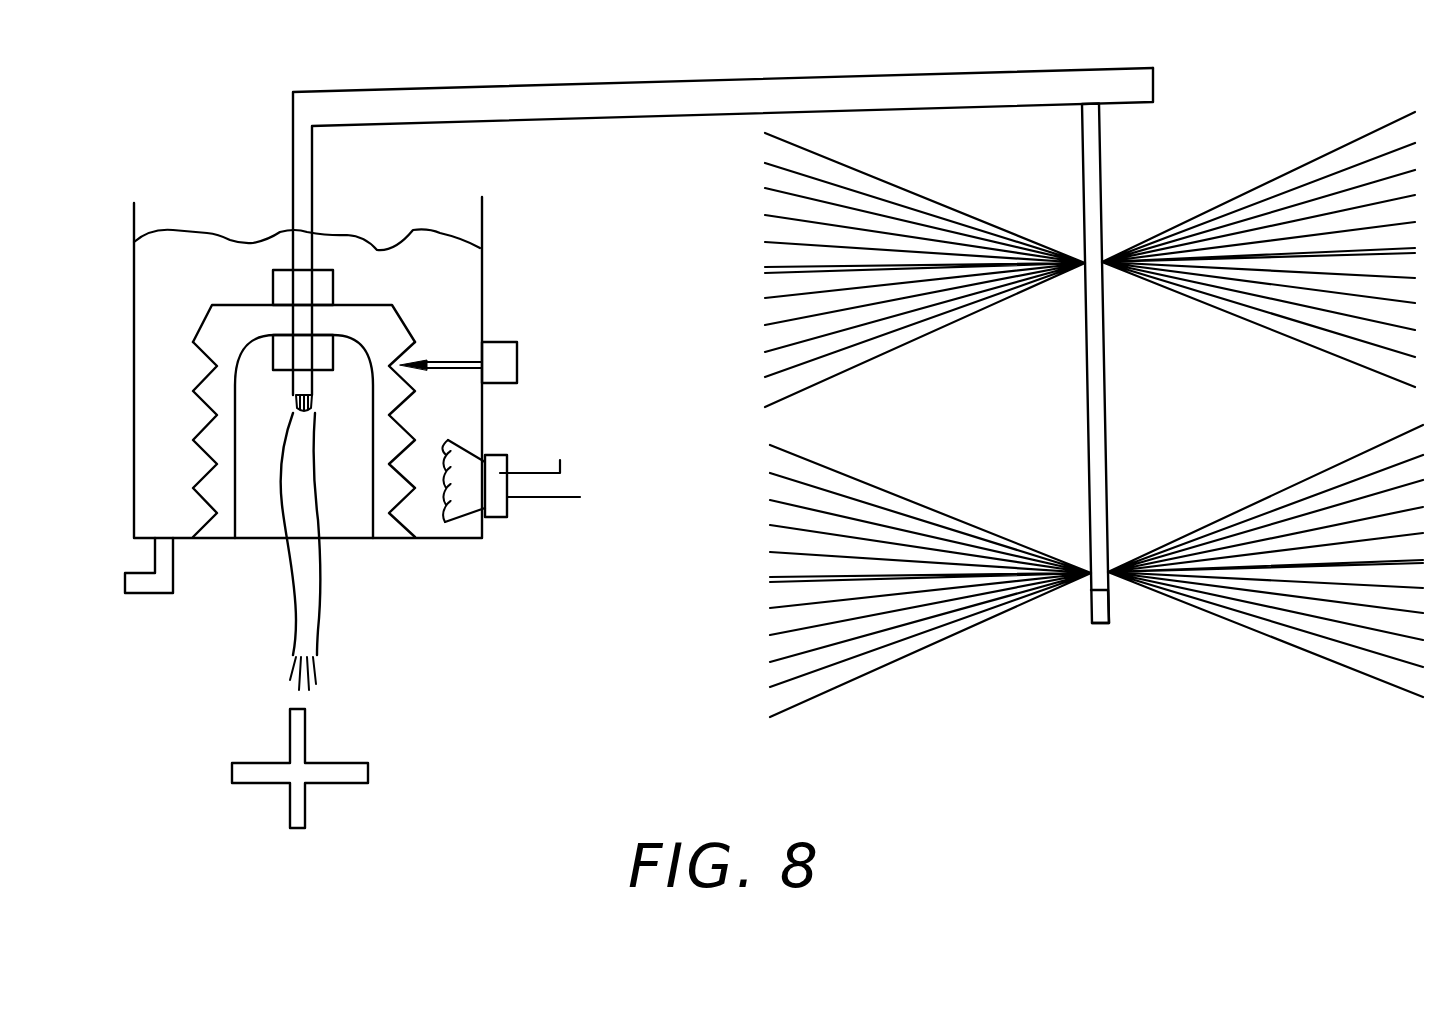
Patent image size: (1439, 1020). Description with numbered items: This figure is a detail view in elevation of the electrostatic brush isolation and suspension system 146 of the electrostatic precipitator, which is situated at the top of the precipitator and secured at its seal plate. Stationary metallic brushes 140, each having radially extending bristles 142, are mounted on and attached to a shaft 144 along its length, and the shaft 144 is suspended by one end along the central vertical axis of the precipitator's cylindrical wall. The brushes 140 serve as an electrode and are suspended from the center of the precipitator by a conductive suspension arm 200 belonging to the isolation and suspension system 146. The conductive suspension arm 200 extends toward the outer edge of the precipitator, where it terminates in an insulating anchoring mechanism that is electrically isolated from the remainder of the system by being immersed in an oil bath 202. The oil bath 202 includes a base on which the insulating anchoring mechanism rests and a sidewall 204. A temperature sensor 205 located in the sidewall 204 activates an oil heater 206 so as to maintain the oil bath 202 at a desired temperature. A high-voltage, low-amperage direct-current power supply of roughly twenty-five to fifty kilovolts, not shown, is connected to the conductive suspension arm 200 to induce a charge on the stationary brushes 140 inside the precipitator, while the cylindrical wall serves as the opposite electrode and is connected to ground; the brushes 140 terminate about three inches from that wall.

The stationary brushes 140 is at (1110, 604).
The radially extending bristles 142 is at (1340, 334).
The shaft 144 is at (1091, 454).
The isolation and suspension system 146 is at (537, 78).
The conductive suspension arm 200 is at (762, 92).
The oil bath 202 is at (227, 532).
The sidewall 204 is at (183, 427).
The temperature sensor 205 is at (508, 372).
The oil heater 206 is at (500, 473).